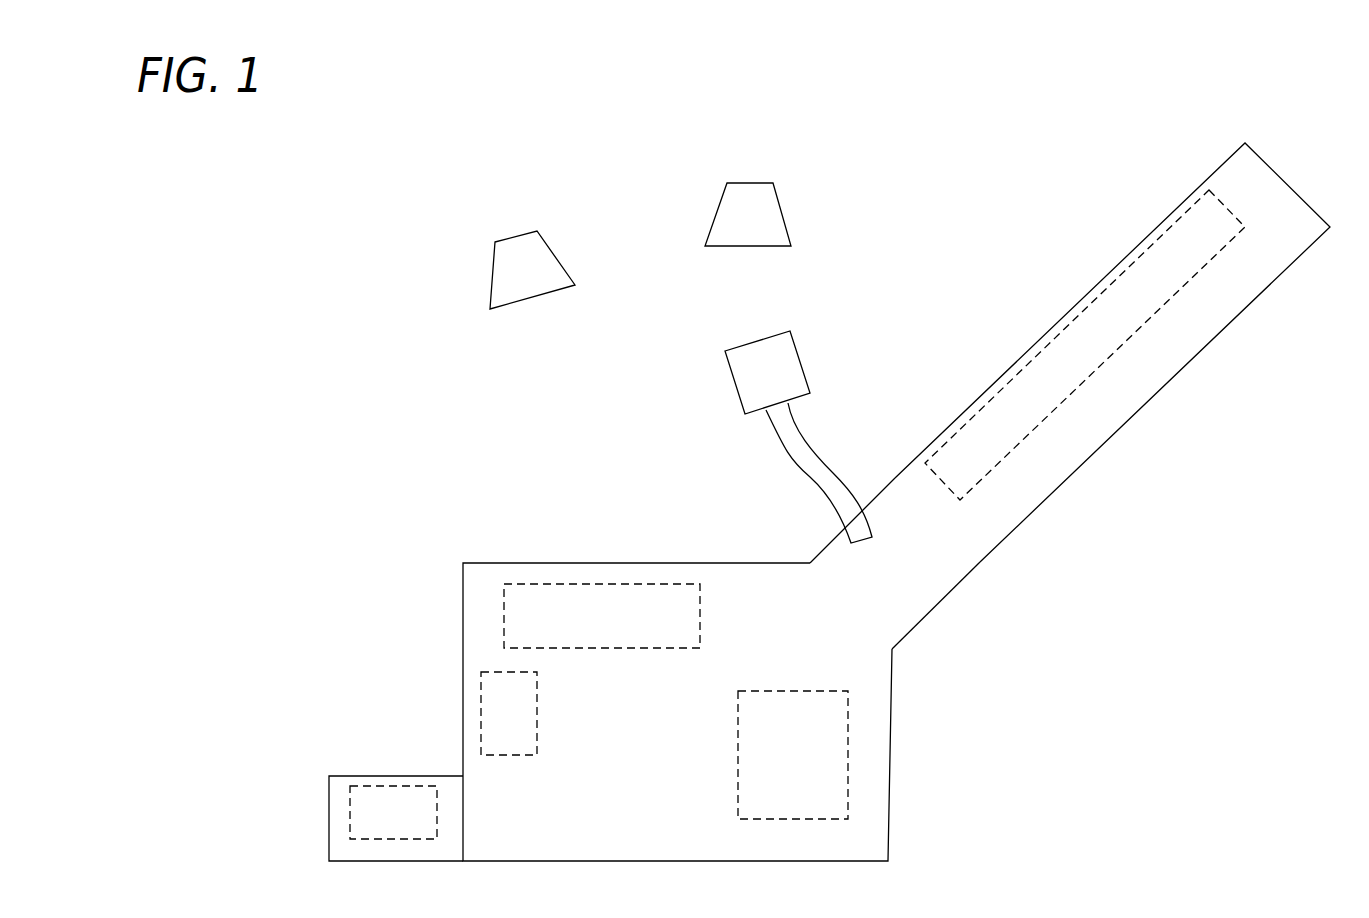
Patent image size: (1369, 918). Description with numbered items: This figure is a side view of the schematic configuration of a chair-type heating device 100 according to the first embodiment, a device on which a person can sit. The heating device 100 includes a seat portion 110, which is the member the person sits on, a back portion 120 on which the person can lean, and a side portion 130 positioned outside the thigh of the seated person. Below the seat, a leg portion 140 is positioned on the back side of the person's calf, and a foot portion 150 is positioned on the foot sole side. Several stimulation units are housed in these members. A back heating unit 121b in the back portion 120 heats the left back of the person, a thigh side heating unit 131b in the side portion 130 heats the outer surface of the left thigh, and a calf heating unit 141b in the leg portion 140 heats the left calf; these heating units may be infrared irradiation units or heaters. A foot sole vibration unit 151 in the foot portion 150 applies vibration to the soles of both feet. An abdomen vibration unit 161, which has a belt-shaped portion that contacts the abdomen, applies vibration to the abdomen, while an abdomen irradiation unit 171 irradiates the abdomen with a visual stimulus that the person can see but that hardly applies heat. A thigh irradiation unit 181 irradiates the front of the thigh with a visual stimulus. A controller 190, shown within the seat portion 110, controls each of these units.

The heating device 100 is at (953, 133).
The seat portion 110 is at (590, 670).
The back portion 120 is at (1133, 393).
The back heating unit 121b is at (1178, 288).
The side portion 130 is at (764, 597).
The thigh side heating unit 131b is at (700, 626).
The leg portion 140 is at (567, 766).
The calf heating unit 141b is at (480, 693).
The foot portion 150 is at (338, 808).
The foot sole vibration unit 151 is at (380, 840).
The abdomen vibration unit 161 is at (778, 352).
The abdomen irradiation unit 171 is at (760, 205).
The thigh irradiation unit 181 is at (510, 287).
The controller 190 is at (848, 775).